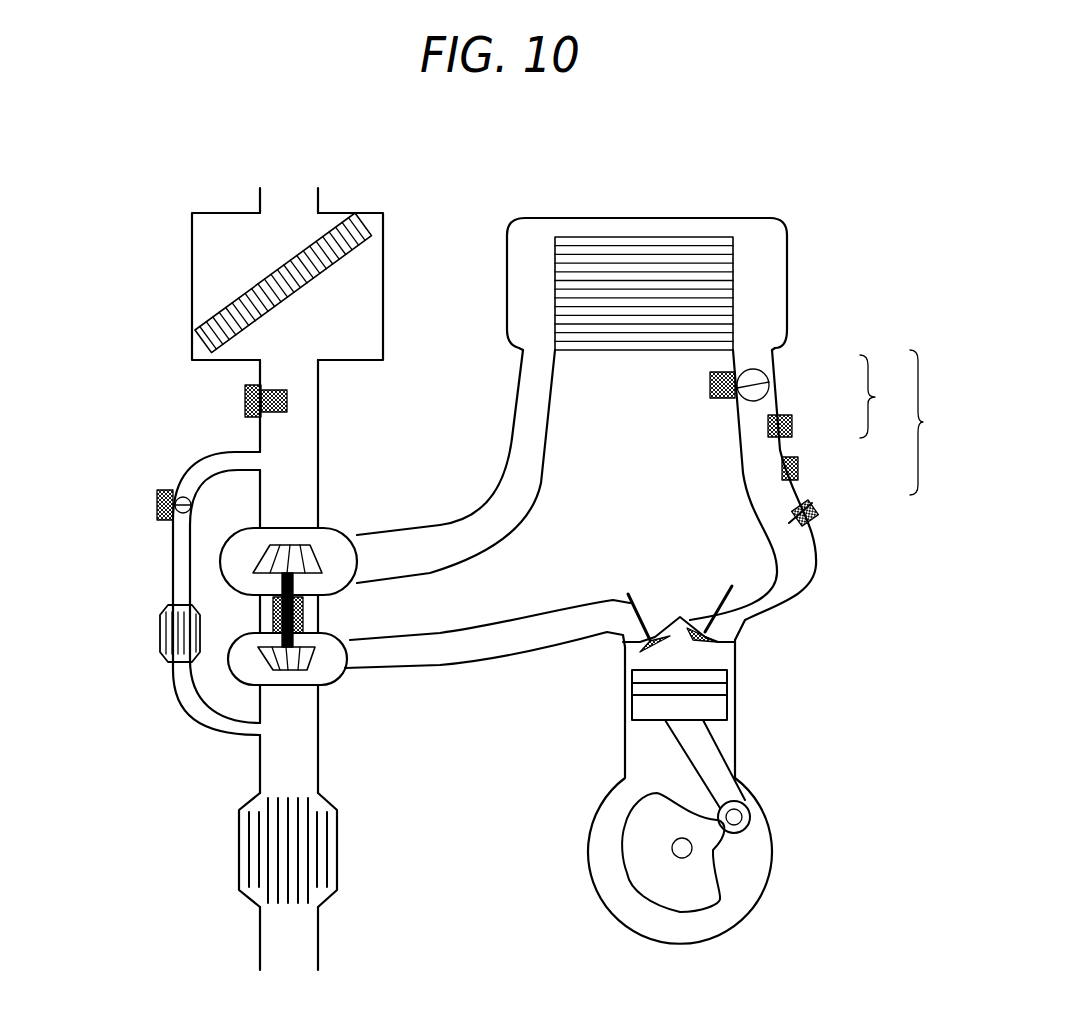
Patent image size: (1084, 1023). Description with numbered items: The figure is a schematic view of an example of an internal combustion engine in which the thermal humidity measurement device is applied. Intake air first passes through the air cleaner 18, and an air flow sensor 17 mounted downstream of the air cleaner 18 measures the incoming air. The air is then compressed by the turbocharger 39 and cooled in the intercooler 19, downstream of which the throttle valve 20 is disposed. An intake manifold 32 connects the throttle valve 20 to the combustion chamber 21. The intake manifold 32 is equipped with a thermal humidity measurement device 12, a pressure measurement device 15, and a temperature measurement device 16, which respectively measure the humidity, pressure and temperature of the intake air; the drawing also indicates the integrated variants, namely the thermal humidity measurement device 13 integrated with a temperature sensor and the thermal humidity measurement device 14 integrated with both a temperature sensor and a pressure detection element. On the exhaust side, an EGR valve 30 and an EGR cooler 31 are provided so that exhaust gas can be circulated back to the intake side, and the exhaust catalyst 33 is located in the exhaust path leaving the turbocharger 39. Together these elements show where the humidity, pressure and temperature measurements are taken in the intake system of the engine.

The thermal humidity measurement device 12 is at (792, 415).
The thermal humidity measurement device (integrated with temperature sensor) 13 is at (885, 396).
The thermal humidity measurement device (integrated with temperature sensor and pres 14 is at (935, 422).
The pressure measurement device 15 is at (795, 458).
The temperature measurement device 16 is at (812, 503).
The air flow sensor 17 is at (243, 402).
The air cleaner 18 is at (190, 318).
The intercooler 19 is at (632, 218).
The throttle valve 20 is at (712, 398).
The combustion chamber 21 is at (740, 677).
The EGR valve 30 is at (157, 502).
The EGR cooler 31 is at (158, 617).
The intake manifold 32 is at (743, 478).
The exhaust catalyst 33 is at (237, 843).
The turbocharger 39 is at (307, 547).